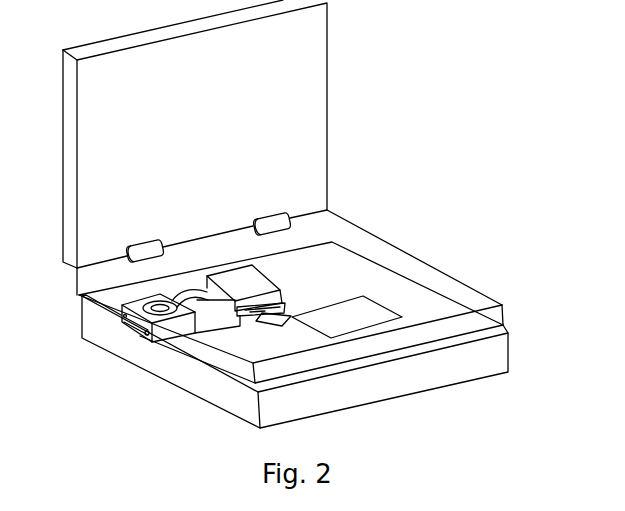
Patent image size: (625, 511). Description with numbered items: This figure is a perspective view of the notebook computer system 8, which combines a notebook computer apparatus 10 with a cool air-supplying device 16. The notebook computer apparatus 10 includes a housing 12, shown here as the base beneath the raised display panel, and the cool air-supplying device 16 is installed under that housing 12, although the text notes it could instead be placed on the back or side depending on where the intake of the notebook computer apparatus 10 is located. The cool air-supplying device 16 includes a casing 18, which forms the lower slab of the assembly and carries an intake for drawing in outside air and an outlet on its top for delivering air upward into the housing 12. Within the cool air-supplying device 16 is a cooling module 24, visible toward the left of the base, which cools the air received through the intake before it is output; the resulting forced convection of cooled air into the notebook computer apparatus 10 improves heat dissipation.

The notebook computer system 8 is at (488, 96).
The notebook computer apparatus 10 is at (318, 158).
The housing 12 is at (505, 310).
The cool air-supplying device 16 is at (505, 346).
The casing 18 is at (463, 365).
The cooling module 24 is at (132, 338).